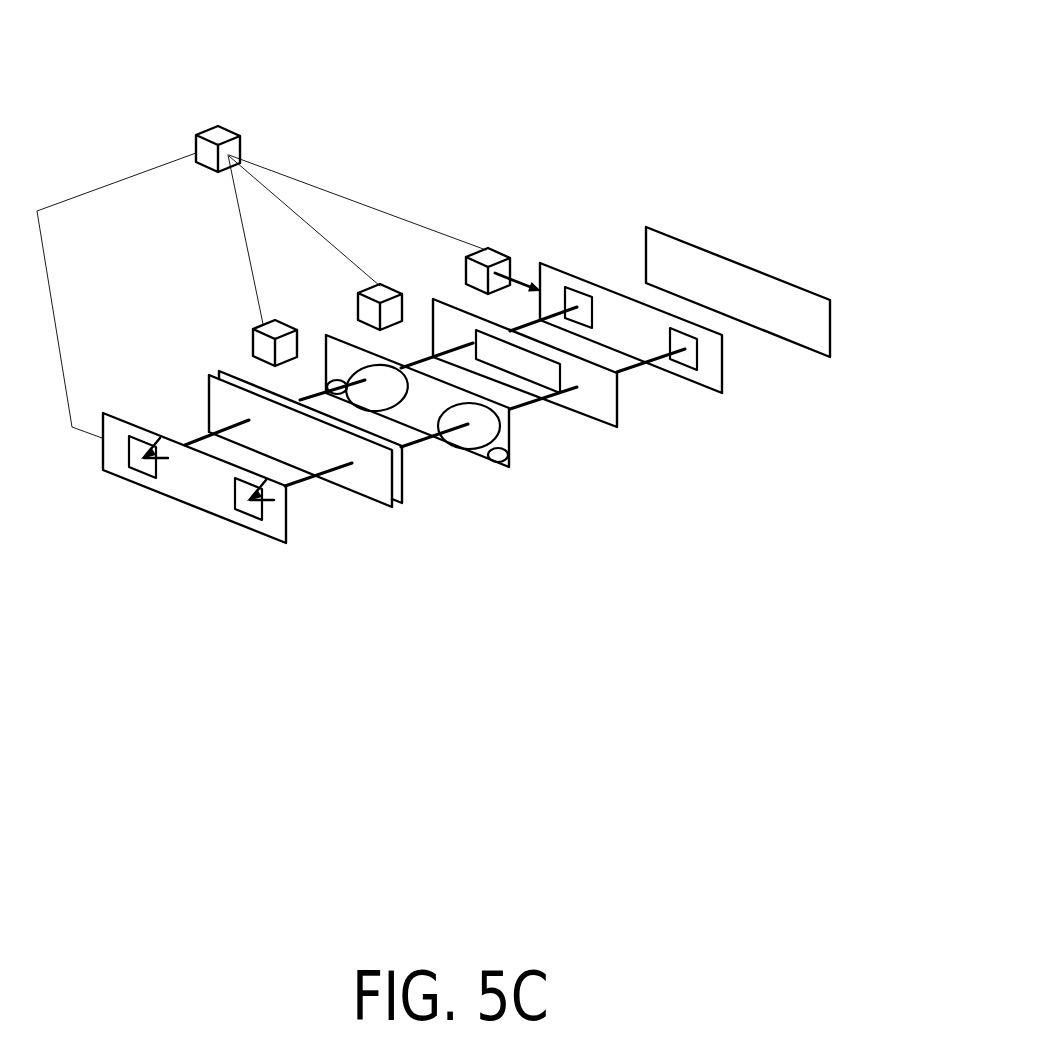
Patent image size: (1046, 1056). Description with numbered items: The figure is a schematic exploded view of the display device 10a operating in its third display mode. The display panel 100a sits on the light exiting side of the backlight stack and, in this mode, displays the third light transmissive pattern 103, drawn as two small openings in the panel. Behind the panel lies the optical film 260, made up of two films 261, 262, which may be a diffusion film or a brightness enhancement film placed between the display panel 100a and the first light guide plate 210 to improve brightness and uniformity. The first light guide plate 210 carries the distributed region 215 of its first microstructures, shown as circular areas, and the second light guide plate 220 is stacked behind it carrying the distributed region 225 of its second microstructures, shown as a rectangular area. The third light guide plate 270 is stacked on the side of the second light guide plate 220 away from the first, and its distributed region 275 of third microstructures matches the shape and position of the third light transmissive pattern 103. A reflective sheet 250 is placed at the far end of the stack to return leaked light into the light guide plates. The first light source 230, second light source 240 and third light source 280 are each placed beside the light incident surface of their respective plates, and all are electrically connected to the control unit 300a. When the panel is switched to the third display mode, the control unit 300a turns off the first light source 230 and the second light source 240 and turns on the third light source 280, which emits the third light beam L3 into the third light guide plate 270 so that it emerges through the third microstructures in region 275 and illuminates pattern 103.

The display device 10a is at (96, 73).
The control unit 300a is at (222, 131).
The first light source 230 is at (253, 345).
The second light source 240 is at (381, 285).
The third light source 280 is at (489, 248).
The third light beam L3 is at (531, 288).
The display panel 100a is at (218, 534).
The third light transmissive pattern 103 is at (141, 466).
The optical film 260 is at (403, 498).
The optical film 261 is at (375, 490).
The optical film 262 is at (400, 485).
The first light guide plate 210 is at (469, 437).
The distributed region of the first microstructures 215 is at (463, 447).
The second light guide plate 220 is at (574, 394).
The distributed region of the second microstructures 225 is at (550, 385).
The third light guide plate 270 is at (695, 353).
The distributed region of the third microstructures 275 is at (688, 351).
The reflective sheet 250 is at (820, 318).